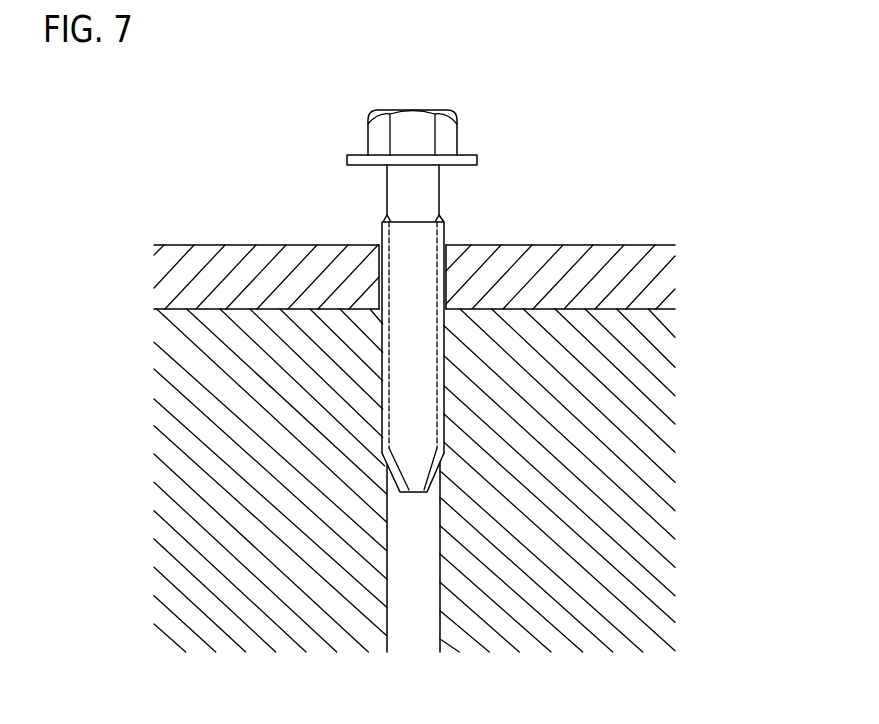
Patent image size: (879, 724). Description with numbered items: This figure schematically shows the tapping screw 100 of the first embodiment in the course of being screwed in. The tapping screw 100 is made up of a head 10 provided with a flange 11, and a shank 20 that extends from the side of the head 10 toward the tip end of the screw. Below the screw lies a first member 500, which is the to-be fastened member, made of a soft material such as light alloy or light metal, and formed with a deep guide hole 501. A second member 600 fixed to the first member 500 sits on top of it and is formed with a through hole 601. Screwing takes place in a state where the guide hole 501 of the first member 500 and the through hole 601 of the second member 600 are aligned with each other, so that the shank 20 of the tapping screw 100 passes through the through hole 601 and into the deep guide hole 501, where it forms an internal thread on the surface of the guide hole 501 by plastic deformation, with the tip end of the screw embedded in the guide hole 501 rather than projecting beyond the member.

The tapping screw 100 is at (334, 282).
The head 10 is at (380, 125).
The flange 11 is at (362, 152).
The shank 20 is at (410, 408).
The first member 500 is at (456, 508).
The guide hole 501 is at (441, 632).
The second member 600 is at (442, 254).
The through hole 601 is at (382, 243).